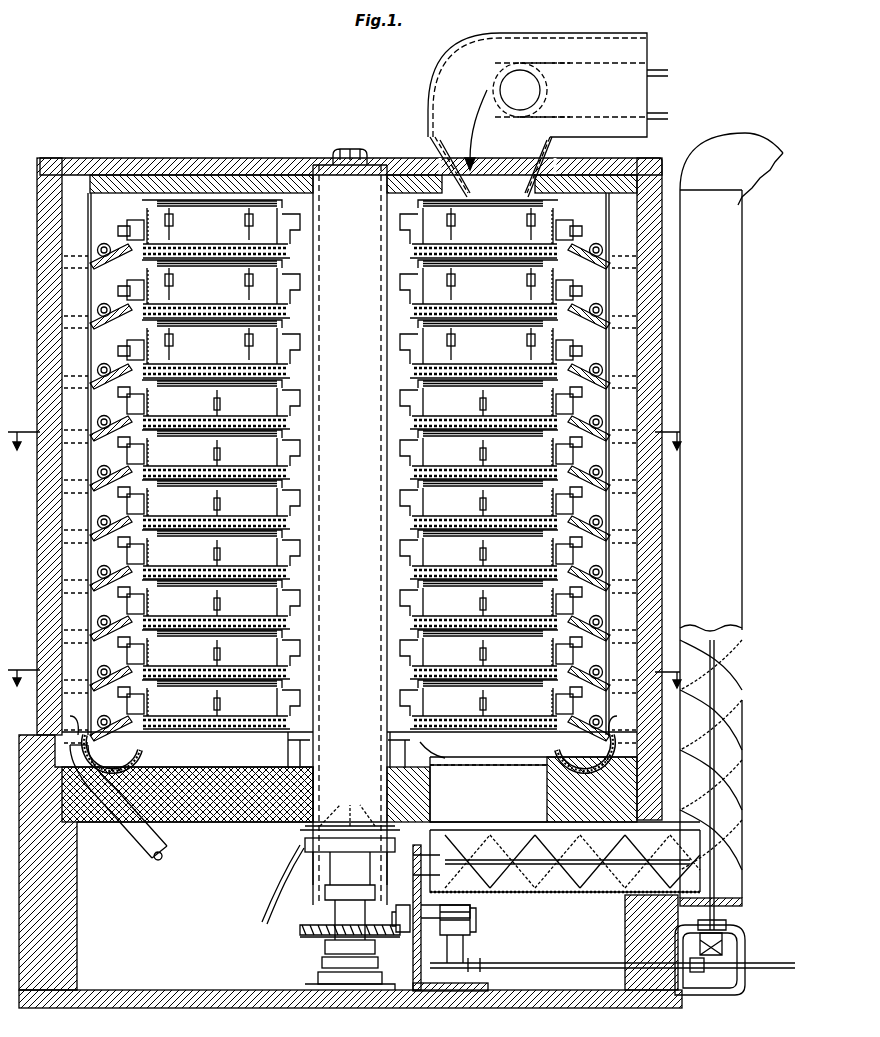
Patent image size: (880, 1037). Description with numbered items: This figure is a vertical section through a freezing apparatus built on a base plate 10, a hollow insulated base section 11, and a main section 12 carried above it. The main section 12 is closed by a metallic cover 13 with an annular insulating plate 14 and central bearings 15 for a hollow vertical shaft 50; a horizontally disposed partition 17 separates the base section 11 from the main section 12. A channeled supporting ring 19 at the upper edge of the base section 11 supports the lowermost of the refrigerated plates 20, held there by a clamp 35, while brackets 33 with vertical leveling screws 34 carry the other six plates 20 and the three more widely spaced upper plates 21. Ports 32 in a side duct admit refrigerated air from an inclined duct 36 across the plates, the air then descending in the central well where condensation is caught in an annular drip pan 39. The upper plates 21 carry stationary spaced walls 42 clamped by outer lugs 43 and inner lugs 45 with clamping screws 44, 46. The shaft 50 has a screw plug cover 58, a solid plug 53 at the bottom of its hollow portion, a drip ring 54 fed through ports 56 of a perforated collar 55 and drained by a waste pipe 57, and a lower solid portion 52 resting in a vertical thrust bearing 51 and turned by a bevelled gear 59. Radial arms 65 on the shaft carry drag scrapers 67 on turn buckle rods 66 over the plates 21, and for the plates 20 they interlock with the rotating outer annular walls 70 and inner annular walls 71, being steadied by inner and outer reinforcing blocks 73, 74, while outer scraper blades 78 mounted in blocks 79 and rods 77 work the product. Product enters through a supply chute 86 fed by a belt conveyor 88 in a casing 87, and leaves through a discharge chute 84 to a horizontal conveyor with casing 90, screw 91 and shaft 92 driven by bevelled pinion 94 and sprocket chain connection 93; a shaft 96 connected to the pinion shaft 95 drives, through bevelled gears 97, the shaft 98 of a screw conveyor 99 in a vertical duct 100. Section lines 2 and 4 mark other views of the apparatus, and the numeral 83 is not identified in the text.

The base plate 10 is at (125, 1000).
The hollow base section 11 is at (76, 928).
The main section 12 is at (38, 296).
The metallic cover 13 is at (205, 178).
The annular insulating plate 14 is at (115, 160).
The bearings 15 is at (335, 176).
The horizontally disposed partition 17 is at (215, 805).
The channeled supporting ring 19 is at (142, 748).
The refrigerated plate 20 is at (350, 471).
The upper refrigerated plate 21 is at (354, 292).
The ports 32 is at (88, 230).
The brackets 33 is at (100, 270).
The vertical leveling screw 34 is at (108, 242).
The clamp 35 is at (166, 713).
The inclined duct 36 is at (128, 832).
The annular drip pan 39 is at (288, 752).
The stationary spaced walls 42 is at (143, 212).
The outer lugs 43 is at (125, 340).
The clamping screws 44 is at (128, 290).
The inner lugs 45 is at (300, 235).
The clamping screws 46 is at (405, 237).
The hollow vertical shaft 50 is at (387, 168).
The vertical thrust bearing 51 is at (322, 957).
The lower solid portion of shaft 52 is at (325, 903).
The solid plug 53 is at (298, 865).
The drip ring 54 is at (355, 850).
The perforated collar 55 is at (305, 829).
The ports 56 is at (347, 813).
The waste pipe 57 is at (283, 900).
The screw plug cover 58 is at (352, 150).
The bevelled gear 59 is at (300, 935).
The radial arms 65 is at (300, 440).
The turn buckle rods 66 is at (367, 280).
The drag scraper 67 is at (353, 281).
The outer annular wall 70 is at (165, 528).
The inner annular wall 71 is at (290, 398).
The inner reinforcing block 73 is at (346, 559).
The outer reinforcing block 74 is at (536, 555).
The turn buckle rod 77 is at (355, 558).
The outer scraper blades 78 is at (359, 558).
The blocks 79 is at (127, 455).
The lower passage 83 is at (348, 715).
The discharge chute 84 is at (440, 758).
The supply chute 86 is at (440, 152).
The duct or casing 87 is at (448, 70).
The belt conveyor 88 is at (548, 70).
The casing 90 is at (545, 887).
The screw 91 is at (500, 880).
The shaft 92 is at (530, 862).
The sprocket chain connection 93 is at (450, 918).
The bevelled pinion 94 is at (405, 932).
The shaft 95 is at (458, 934).
The shaft 96 is at (538, 962).
The bevelled gears 97 is at (725, 960).
The shaft 98 is at (716, 840).
The screw conveyor 99 is at (720, 760).
The vertical duct 100 is at (743, 655).
The section line 2 is at (344, 449).
The section line 4 is at (344, 688).